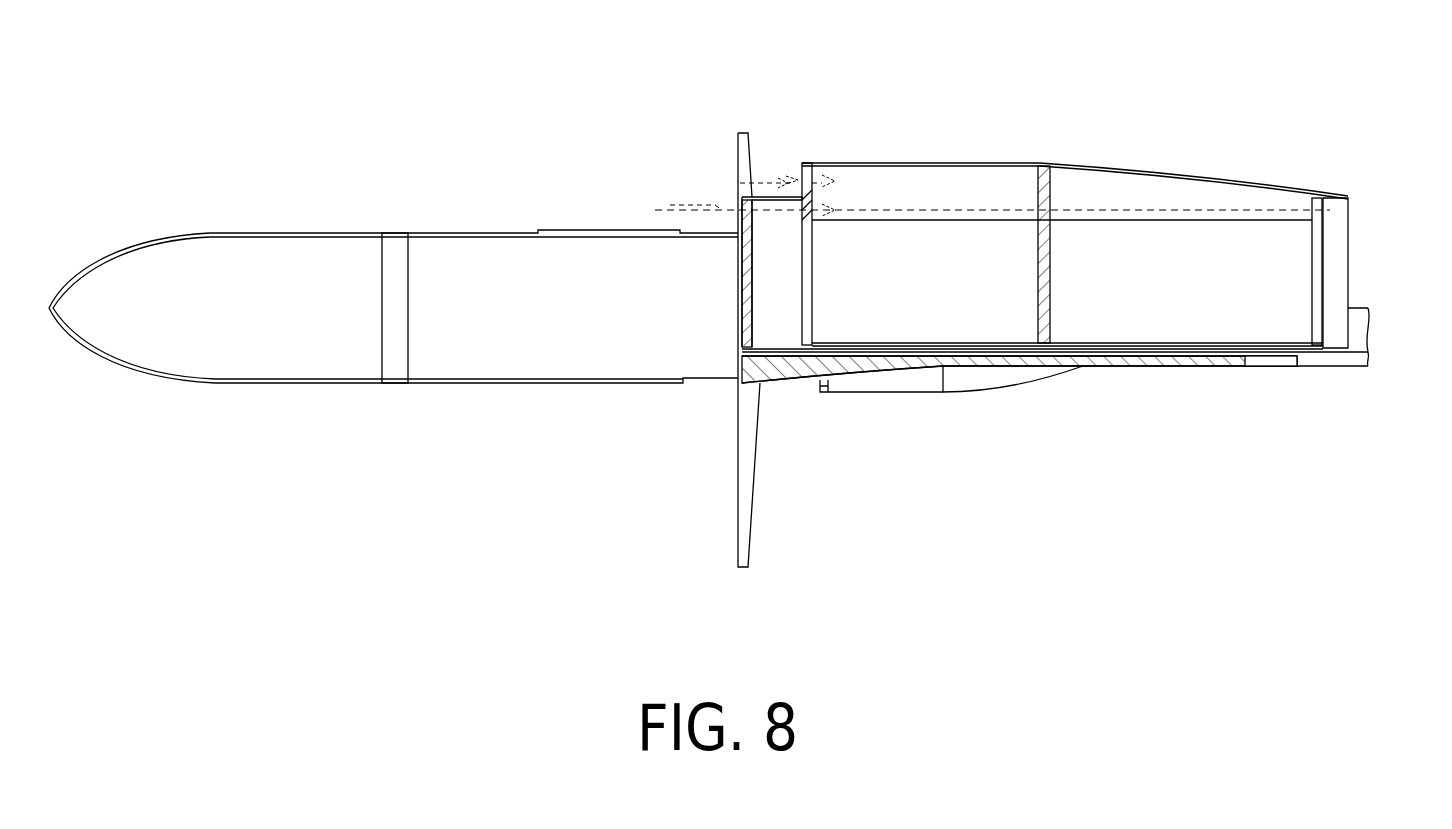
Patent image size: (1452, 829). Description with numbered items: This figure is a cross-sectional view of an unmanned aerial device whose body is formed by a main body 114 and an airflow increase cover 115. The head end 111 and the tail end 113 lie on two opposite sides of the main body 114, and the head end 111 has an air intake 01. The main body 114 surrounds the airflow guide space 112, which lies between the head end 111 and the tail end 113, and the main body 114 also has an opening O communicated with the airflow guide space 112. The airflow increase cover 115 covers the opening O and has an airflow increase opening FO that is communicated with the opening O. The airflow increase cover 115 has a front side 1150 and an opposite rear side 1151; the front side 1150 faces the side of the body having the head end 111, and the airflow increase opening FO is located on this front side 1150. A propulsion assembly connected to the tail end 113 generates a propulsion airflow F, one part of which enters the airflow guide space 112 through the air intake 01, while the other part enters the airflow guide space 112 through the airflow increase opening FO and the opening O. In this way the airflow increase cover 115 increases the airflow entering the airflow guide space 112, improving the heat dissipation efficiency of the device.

The air intake 01 is at (713, 228).
The head end 111 is at (741, 206).
The front side 1150 is at (800, 178).
The airflow increase cover 115 is at (995, 163).
The rear side 1151 is at (1323, 197).
The tail end 113 is at (1350, 197).
The main body 114 is at (1107, 367).
The airflow guide space 112 is at (878, 310).
The opening O is at (938, 200).
The propulsion airflow F is at (740, 172).
The airflow increase opening FO is at (796, 180).